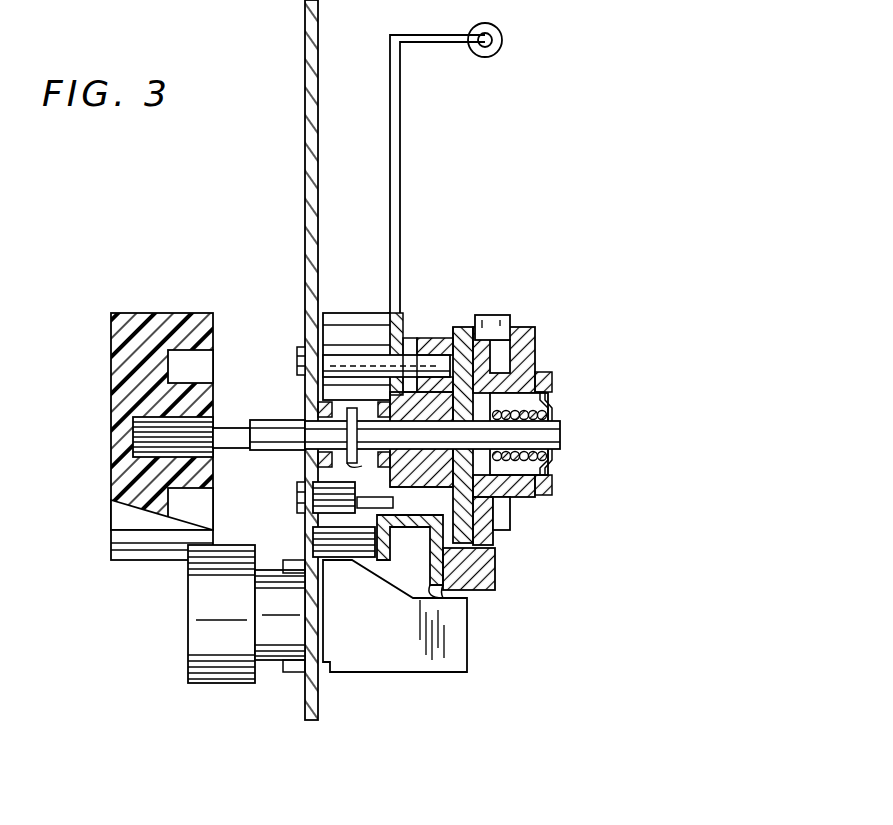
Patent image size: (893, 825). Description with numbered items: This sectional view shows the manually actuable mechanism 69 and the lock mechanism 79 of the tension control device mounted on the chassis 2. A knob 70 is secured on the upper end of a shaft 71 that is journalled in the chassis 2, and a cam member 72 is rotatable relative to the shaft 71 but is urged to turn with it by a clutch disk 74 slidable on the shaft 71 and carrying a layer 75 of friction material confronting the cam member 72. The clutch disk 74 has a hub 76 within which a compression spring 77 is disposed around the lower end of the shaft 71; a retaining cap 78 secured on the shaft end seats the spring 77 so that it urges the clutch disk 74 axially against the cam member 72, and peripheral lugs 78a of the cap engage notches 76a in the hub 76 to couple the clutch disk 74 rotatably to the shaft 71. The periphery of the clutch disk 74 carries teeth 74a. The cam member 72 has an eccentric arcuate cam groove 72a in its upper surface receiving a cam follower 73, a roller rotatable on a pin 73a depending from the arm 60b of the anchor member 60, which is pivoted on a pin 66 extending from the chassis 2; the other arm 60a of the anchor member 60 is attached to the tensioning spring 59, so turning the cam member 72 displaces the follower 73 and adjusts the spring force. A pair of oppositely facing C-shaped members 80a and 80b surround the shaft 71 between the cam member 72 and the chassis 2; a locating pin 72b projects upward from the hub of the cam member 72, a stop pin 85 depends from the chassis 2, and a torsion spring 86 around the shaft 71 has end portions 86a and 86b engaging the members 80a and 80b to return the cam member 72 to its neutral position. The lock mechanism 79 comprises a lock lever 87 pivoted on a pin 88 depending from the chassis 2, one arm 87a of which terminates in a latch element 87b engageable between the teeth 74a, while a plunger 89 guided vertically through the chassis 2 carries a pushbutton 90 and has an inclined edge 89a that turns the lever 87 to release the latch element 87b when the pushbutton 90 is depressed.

The chassis 2 is at (318, 17).
The tensioning spring 59 is at (503, 41).
The anchor member 60 is at (410, 219).
The arm 60a is at (418, 110).
The arm 60b is at (331, 314).
The pivot pin 66 is at (330, 352).
The manually actuable mechanism 69 is at (527, 280).
The knob 70 is at (128, 482).
The shaft 71 is at (268, 436).
The cam member 72 is at (462, 322).
The arcuate cam groove 72a is at (448, 332).
The locating pin 72b is at (388, 489).
The cam follower 73 is at (440, 352).
The pin 73a is at (360, 355).
The clutch disk 74 is at (488, 366).
The teeth 74a is at (500, 318).
The layer of friction material 75 is at (490, 515).
The hub 76 is at (522, 478).
The notches 76a is at (553, 381).
The compression spring 77 is at (546, 413).
The retaining cap 78 is at (548, 456).
The peripheral lugs 78a is at (553, 495).
The lock mechanism 79 is at (509, 593).
The C-shaped member 80a is at (320, 402).
The C-shaped member 80b is at (332, 414).
The stop pin 85 is at (340, 511).
The torsion spring 86 is at (358, 430).
The end portion 86a is at (318, 466).
The end portion 86b is at (320, 372).
The lock lever 87 is at (404, 535).
The arm 87a is at (432, 598).
The latch element 87b is at (490, 574).
The pivot pin 88 is at (346, 558).
The plunger 89 is at (367, 662).
The inclined edge 89a is at (397, 584).
The pushbutton 90 is at (205, 672).